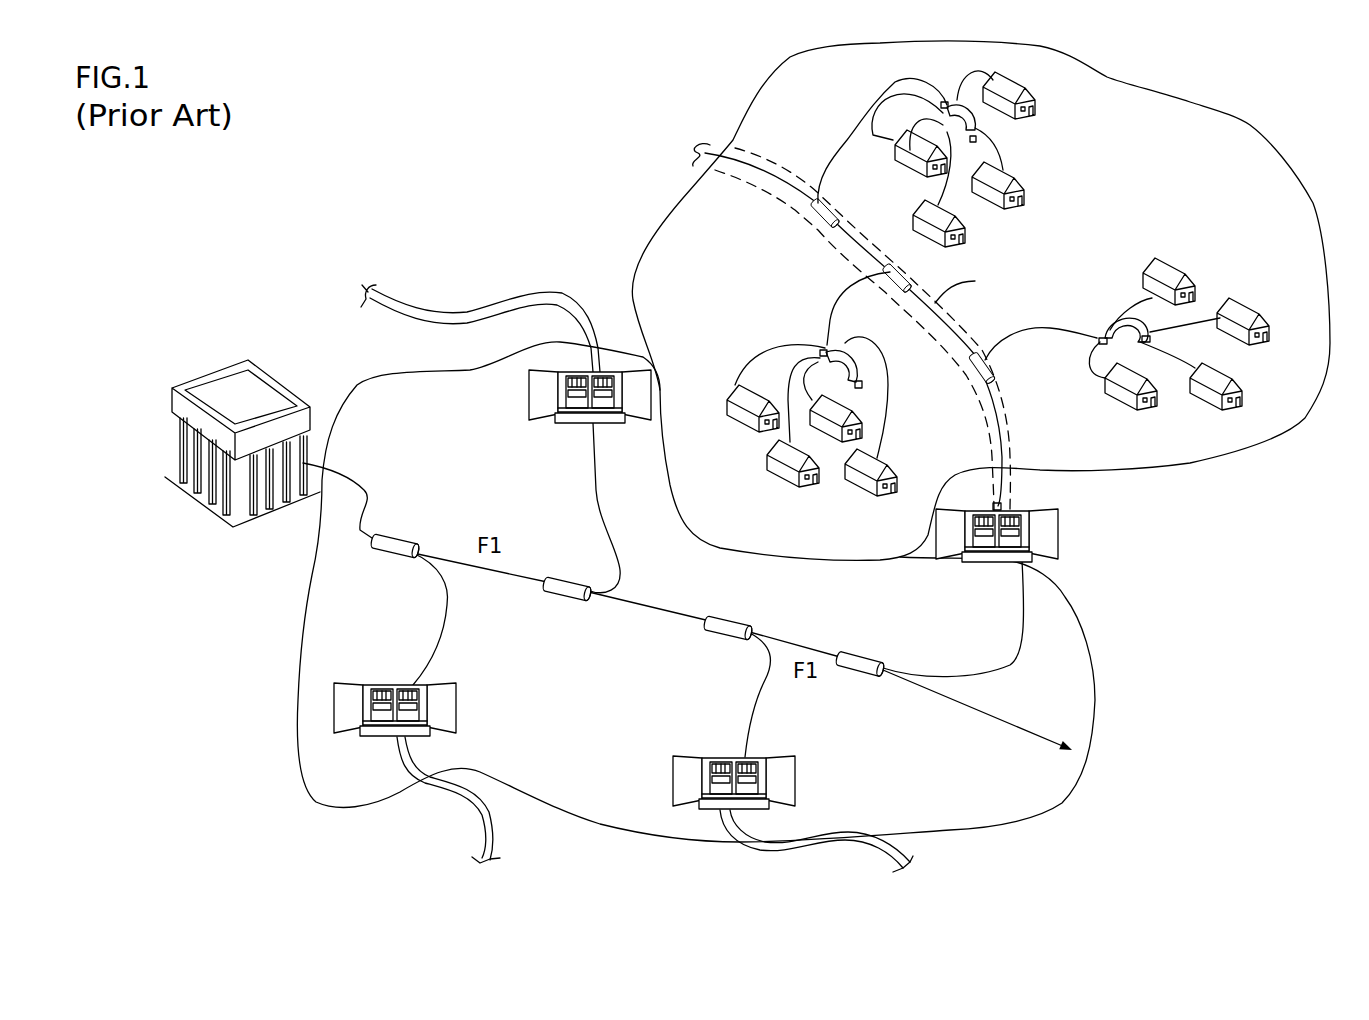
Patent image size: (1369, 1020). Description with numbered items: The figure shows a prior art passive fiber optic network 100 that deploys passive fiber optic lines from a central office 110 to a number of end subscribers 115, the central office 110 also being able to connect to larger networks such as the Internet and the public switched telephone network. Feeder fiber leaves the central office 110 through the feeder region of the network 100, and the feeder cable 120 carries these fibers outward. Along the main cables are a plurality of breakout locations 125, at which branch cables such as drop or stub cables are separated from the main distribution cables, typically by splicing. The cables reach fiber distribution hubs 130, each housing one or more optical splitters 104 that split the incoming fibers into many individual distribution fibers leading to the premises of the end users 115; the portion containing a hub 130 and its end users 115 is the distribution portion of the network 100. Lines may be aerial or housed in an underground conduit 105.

The network 100 is at (410, 203).
The optical splitter 104 is at (951, 100).
The conduit 105 is at (1002, 410).
The central office 110 is at (178, 440).
The end subscribers 115 is at (1005, 177).
The feeder cable 120 is at (365, 487).
The breakout locations 125 is at (398, 538).
The fiber distribution hubs 130 is at (640, 418).